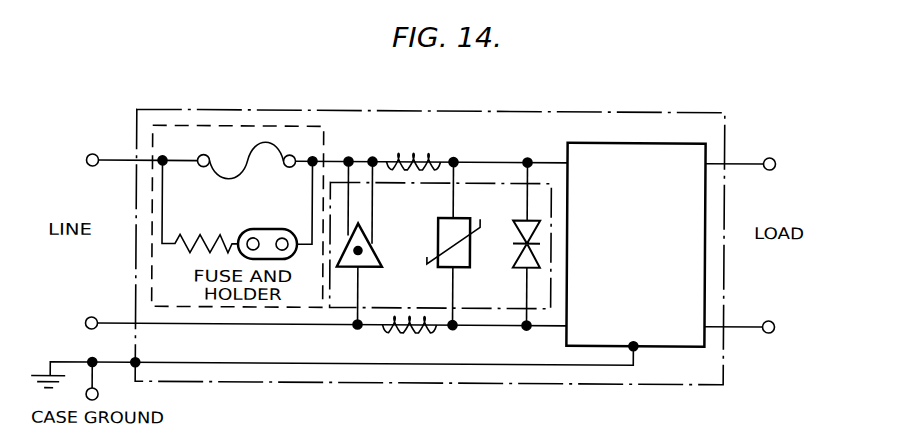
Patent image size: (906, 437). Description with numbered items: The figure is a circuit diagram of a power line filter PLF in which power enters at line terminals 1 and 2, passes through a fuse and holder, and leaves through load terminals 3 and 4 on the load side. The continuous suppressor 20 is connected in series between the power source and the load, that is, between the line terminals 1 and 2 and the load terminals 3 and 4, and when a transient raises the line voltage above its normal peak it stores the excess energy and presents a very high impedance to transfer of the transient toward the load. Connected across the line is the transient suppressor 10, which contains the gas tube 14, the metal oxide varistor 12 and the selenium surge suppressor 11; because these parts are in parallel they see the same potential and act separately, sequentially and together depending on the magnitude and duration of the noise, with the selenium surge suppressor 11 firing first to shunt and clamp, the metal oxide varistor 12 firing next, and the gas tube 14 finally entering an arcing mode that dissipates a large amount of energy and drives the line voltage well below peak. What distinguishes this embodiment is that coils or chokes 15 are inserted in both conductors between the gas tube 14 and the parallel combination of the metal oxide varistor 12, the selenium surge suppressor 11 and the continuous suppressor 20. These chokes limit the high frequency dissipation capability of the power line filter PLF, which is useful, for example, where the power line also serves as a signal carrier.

The line terminal 1 is at (116, 161).
The line terminal 2 is at (316, 325).
The load terminal 3 is at (750, 165).
The load terminal 4 is at (749, 328).
The transient suppressor 10 is at (347, 299).
The selenium surge suppressor 11 is at (522, 272).
The metal oxide varistor 12 is at (461, 218).
The gas tube 14 is at (381, 254).
The coils or chokes 15 is at (427, 158).
The continuous suppressor 20 is at (670, 333).
The power line filter PLF is at (545, 121).